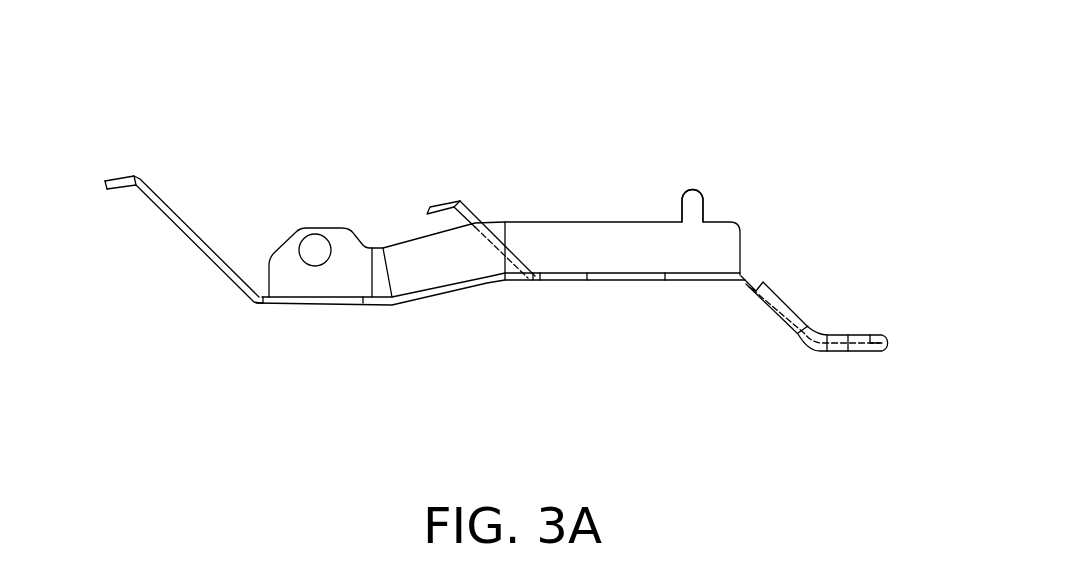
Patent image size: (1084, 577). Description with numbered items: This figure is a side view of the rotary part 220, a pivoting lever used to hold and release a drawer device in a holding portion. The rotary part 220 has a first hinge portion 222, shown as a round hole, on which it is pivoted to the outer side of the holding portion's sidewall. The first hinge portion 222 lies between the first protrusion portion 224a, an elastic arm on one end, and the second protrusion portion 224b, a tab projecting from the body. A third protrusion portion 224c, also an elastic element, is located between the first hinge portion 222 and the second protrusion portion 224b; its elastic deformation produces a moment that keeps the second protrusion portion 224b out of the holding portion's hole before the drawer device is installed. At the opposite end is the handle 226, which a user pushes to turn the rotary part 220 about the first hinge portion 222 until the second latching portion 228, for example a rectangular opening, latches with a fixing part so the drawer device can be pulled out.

The rotary part 220 is at (757, 458).
The first hinge portion 222 is at (320, 250).
The first protrusion portion 224a is at (187, 222).
The second protrusion portion 224b is at (693, 207).
The third protrusion portion 224c is at (457, 203).
The handle 226 is at (858, 333).
The second latching portion 228 is at (630, 288).